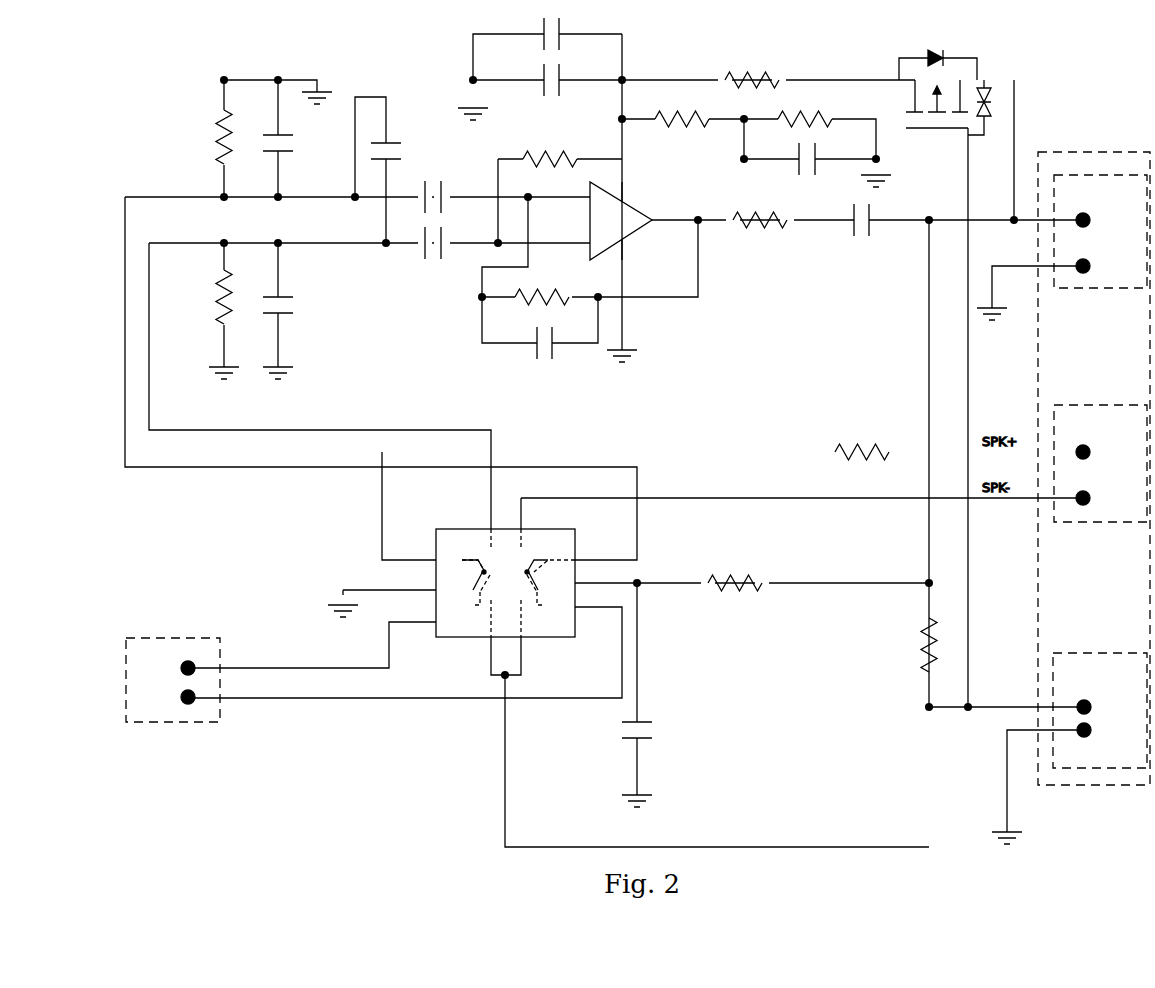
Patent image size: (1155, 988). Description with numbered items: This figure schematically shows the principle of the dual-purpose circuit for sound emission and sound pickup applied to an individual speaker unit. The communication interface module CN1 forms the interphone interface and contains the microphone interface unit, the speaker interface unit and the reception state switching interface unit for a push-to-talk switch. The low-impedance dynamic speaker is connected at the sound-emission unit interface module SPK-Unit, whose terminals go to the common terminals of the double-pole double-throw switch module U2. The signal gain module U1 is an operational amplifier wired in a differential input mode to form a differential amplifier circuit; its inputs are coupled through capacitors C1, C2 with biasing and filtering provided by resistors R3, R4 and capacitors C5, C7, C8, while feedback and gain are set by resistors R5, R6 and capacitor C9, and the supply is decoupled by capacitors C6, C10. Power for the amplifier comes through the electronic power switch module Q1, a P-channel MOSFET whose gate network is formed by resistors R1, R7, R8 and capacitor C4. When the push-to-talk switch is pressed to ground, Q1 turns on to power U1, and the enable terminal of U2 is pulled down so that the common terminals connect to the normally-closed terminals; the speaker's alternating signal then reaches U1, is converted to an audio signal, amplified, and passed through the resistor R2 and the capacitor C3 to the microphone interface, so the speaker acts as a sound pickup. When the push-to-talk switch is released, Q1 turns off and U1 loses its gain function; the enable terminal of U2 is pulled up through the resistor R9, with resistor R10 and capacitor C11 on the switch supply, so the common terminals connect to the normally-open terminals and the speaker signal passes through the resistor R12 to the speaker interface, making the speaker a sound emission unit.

The resistor R1 is at (752, 64).
The resistor R2 is at (760, 204).
The resistor R3 is at (210, 138).
The resistor R4 is at (210, 305).
The resistor R5 is at (560, 181).
The resistor R6 is at (590, 251).
The resistor R7 is at (683, 106).
The resistor R8 is at (810, 122).
The resistor R9 is at (918, 645).
The resistor R10 is at (735, 568).
The resistor R12 is at (862, 435).
The capacitor C1 is at (424, 194).
The capacitor C2 is at (424, 241).
The capacitor C3 is at (848, 218).
The capacitor C4 is at (810, 157).
The capacitor C5 is at (388, 170).
The capacitor C6 is at (547, 77).
The capacitor C7 is at (289, 138).
The capacitor C8 is at (289, 305).
The capacitor C9 is at (540, 328).
The capacitor C10 is at (547, 46).
The capacitor C11 is at (638, 745).
The signal gain module U1 is at (625, 219).
The double-pole double-throw switch module U2 is at (466, 587).
The electronic power switch module Q1 is at (934, 89).
The communication interface module CN1 is at (1094, 454).
The sound-emission unit interface module SPK-Unit is at (173, 670).